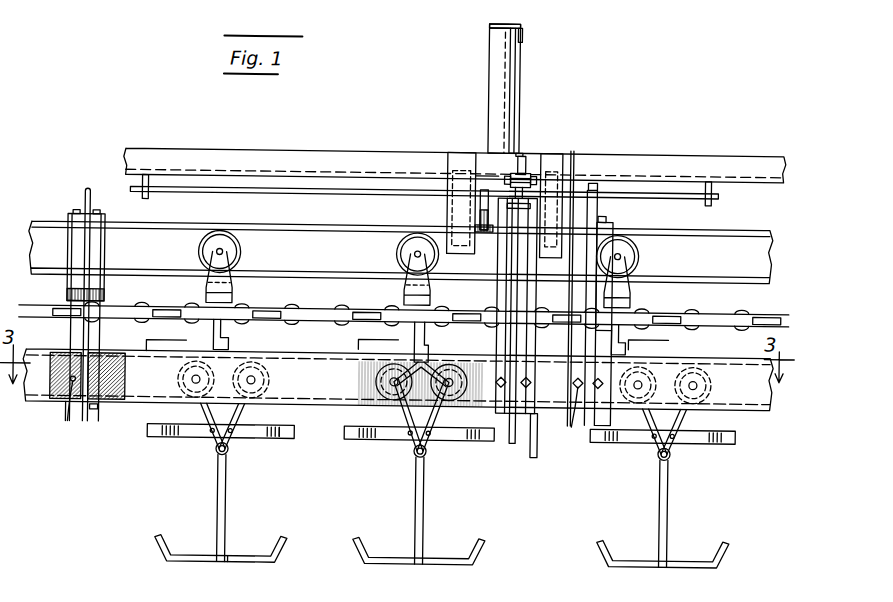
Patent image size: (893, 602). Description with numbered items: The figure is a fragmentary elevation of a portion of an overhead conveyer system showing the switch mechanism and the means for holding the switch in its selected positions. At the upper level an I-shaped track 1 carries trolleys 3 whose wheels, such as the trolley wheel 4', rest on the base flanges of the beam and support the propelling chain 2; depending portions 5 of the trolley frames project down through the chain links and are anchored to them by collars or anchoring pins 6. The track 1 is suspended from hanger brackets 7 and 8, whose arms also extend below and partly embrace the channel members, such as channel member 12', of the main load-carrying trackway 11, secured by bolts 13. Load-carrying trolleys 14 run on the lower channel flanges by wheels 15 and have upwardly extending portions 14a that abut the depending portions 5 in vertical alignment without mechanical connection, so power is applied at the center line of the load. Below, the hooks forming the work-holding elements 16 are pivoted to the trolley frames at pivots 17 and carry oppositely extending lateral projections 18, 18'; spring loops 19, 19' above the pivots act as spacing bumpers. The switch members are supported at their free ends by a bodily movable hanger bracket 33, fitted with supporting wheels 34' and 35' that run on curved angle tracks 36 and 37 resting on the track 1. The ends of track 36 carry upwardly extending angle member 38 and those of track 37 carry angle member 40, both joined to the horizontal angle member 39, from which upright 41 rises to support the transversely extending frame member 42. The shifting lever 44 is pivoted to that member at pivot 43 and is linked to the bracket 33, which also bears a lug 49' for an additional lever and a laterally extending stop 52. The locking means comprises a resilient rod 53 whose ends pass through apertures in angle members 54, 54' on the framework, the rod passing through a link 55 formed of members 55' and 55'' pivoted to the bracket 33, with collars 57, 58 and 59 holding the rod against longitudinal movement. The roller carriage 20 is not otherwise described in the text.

The track 1 is at (315, 240).
The propelling chain 2 is at (320, 310).
The trolleys 3 is at (394, 292).
The trolley wheel 4' is at (399, 253).
The depending portions 5 is at (190, 333).
The collars or anchoring pins 6 is at (232, 312).
The hanger bracket 7 is at (70, 240).
The hanger bracket 8 is at (612, 222).
The main load-carrying trackway 11 is at (340, 411).
The channel member 12' is at (402, 403).
The bolts 13 is at (70, 410).
The load-carrying trolleys 14 is at (190, 412).
The upwardly extending portions 14a is at (232, 343).
The wheels 15 is at (419, 463).
The work-holding or carrying elements 16 is at (220, 484).
The pivot 17 is at (231, 449).
The lateral projection 18 is at (221, 540).
The lateral projection 18' is at (259, 539).
The spring loop 19 is at (216, 448).
The spring loop 19' is at (292, 451).
The right roller carriage 20 is at (663, 467).
The movable hanger bracket 33 is at (514, 417).
The supporting wheel 34' is at (424, 154).
The supporting wheel 35' is at (427, 208).
The track 36 is at (590, 188).
The track 37 is at (475, 222).
The upwardly extending angle member 38 is at (556, 168).
The horizontally extending angle member 39 is at (400, 172).
The upwardly extending angle member 40 is at (456, 168).
The upright 41 is at (487, 89).
The transversely extending frame member 42 is at (488, 19).
The pivot 43 is at (521, 30).
The shifting lever 44 is at (518, 70).
The laterally extending lug 49' is at (501, 306).
The stop 52 is at (540, 445).
The resilient rod 53 is at (298, 170).
The transversely extending angle member 54 is at (161, 157).
The transversely extending angle member 54' is at (730, 163).
The link 55 is at (530, 142).
The link member 55' is at (565, 141).
The link member 55'' is at (483, 146).
The collar 57 is at (530, 168).
The collar 58 is at (525, 150).
The collar 59 is at (490, 168).